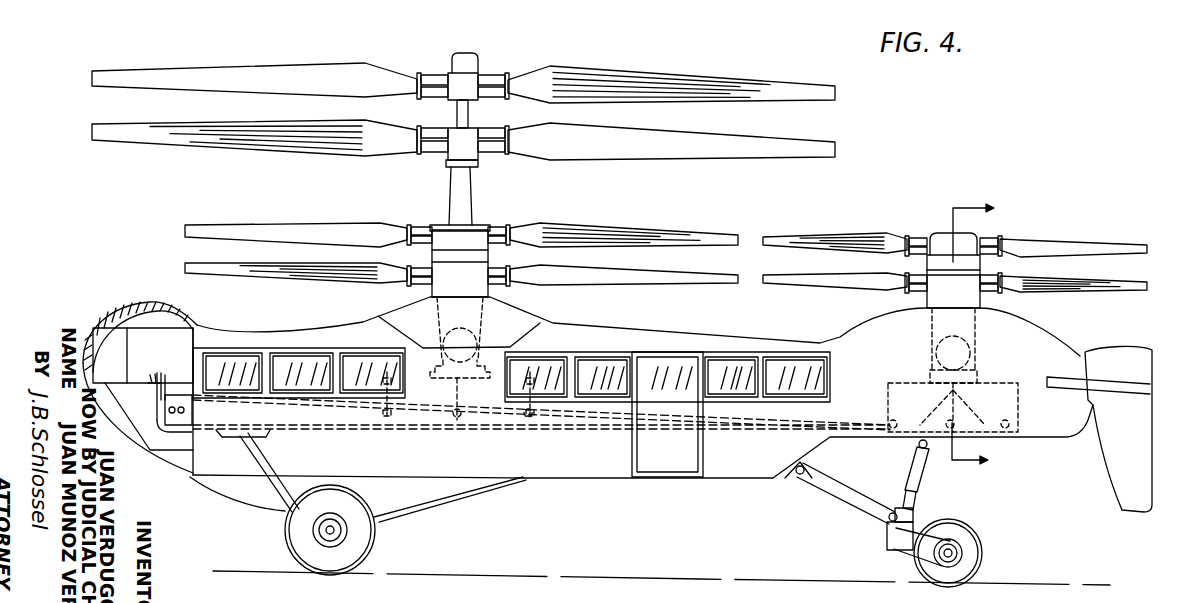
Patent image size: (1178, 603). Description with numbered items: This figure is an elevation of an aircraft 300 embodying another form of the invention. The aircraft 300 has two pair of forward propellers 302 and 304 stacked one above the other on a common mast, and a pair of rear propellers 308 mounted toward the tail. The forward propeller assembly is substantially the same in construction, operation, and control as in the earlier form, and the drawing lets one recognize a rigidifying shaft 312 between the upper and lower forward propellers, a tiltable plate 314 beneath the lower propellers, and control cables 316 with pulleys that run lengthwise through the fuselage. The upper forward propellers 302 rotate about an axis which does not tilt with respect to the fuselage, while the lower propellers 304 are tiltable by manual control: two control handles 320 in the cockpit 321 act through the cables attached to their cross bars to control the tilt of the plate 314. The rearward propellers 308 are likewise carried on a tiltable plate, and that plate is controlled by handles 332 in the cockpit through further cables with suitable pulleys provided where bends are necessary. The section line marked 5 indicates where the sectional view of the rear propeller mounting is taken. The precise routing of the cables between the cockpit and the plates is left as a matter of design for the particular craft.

The aircraft 300 is at (549, 480).
The forward propellers 302 is at (88, 68).
The lower propellers 304 is at (180, 218).
The rear propellers 308 is at (766, 233).
The rigidifying shaft 312 is at (475, 195).
The tiltable plate 314 is at (447, 379).
The control cables 316 is at (353, 431).
The control handles 320 is at (160, 374).
The cockpit 321 is at (140, 297).
The handles 332 is at (149, 377).
The section line 5- 5 is at (980, 344).